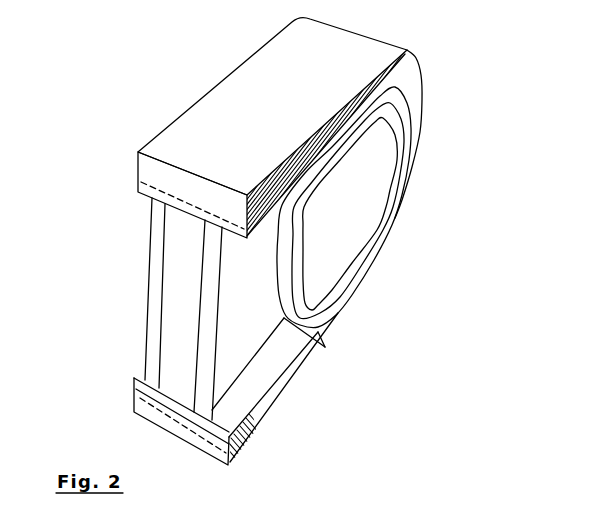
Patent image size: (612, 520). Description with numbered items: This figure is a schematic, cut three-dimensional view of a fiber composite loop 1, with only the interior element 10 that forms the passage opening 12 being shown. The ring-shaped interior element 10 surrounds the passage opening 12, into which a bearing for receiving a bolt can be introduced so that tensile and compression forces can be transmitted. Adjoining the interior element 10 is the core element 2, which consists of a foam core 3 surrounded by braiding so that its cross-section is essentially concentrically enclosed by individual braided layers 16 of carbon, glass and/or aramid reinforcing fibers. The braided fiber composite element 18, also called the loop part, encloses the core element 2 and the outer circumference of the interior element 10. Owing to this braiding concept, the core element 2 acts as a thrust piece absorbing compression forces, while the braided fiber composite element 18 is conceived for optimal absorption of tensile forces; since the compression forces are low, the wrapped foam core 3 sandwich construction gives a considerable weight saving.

The fiber composite loop 1 is at (442, 90).
The core element 2 is at (131, 268).
The foam core 3 is at (171, 328).
The interior element 10 is at (320, 327).
The passage opening 12 is at (352, 233).
The braided layers 16 is at (211, 308).
The braided fiber composite element 18 is at (203, 114).